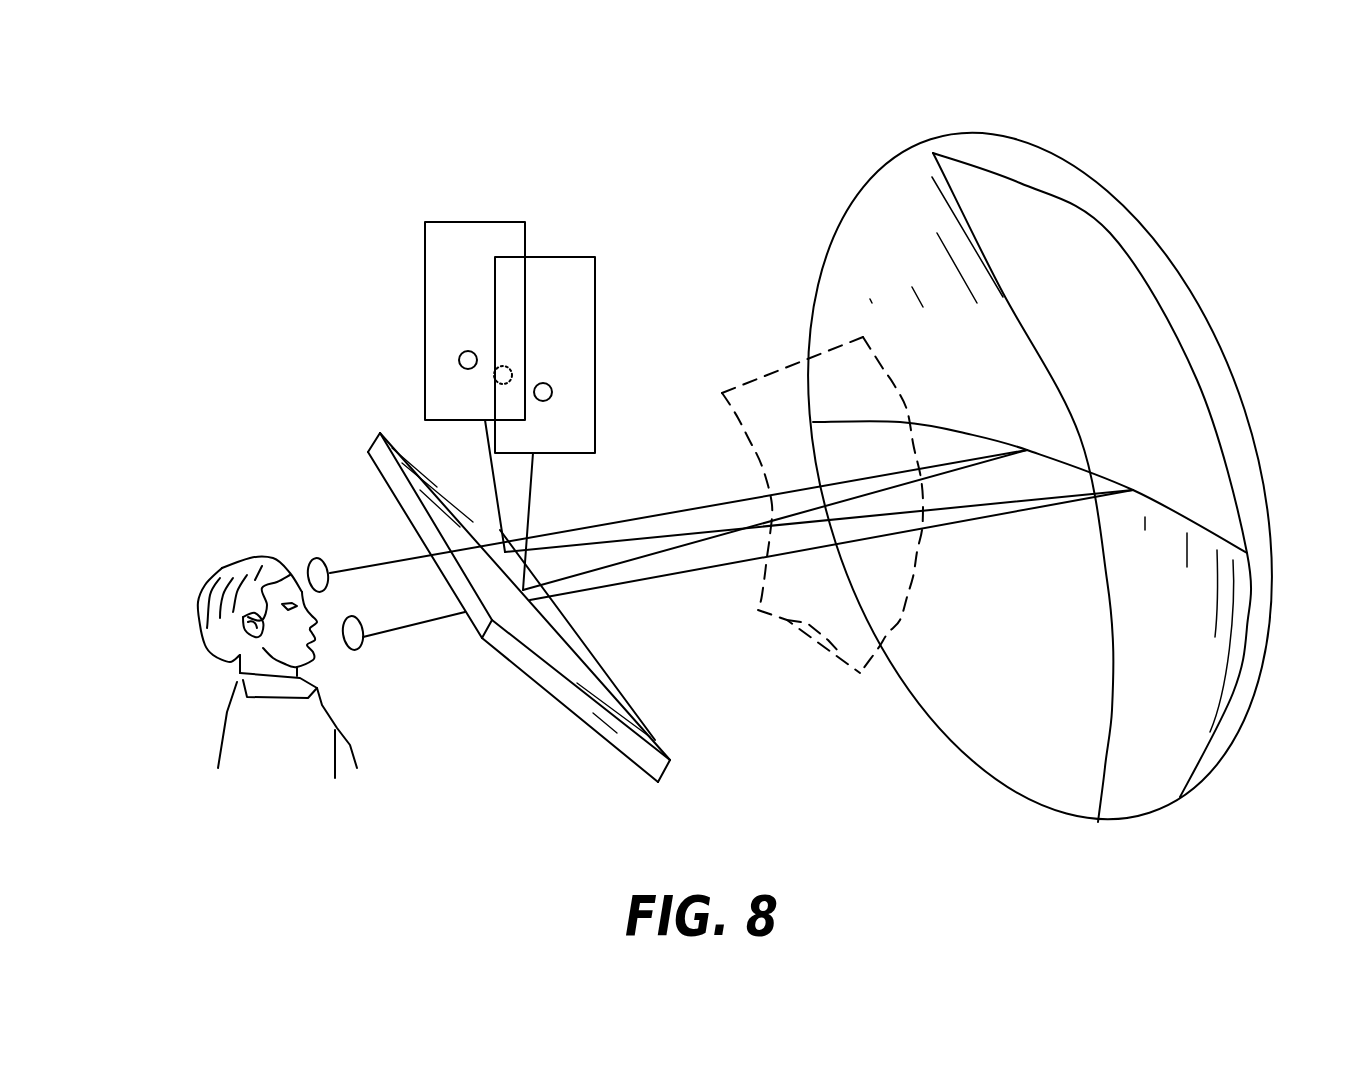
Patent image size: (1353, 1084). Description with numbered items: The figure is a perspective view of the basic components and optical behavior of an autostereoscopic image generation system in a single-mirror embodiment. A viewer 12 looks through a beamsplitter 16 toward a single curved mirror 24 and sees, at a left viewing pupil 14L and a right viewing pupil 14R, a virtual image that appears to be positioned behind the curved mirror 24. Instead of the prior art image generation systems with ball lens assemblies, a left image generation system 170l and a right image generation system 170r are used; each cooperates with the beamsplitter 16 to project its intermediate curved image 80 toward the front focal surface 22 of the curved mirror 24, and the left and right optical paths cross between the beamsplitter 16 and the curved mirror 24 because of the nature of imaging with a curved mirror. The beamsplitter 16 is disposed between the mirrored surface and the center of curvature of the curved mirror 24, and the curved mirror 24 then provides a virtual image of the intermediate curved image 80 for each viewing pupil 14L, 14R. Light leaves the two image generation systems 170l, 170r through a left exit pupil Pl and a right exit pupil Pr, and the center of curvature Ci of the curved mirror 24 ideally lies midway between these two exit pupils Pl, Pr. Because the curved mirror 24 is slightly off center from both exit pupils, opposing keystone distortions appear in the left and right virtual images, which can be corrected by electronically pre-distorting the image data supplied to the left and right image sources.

The viewer 12 is at (218, 572).
The left viewing pupil 14L is at (316, 558).
The right viewing pupil 14R is at (363, 642).
The beamsplitter 16 is at (668, 762).
The front focal surface 22 is at (760, 485).
The curved mirror 24 is at (1008, 137).
The intermediate curved image 80 is at (860, 673).
The right image generation system 170r is at (472, 227).
The left image generation system 170l is at (555, 255).
The right exit pupil Pr is at (458, 358).
The left exit pupil Pl is at (553, 391).
The center of curvature Ci is at (496, 368).